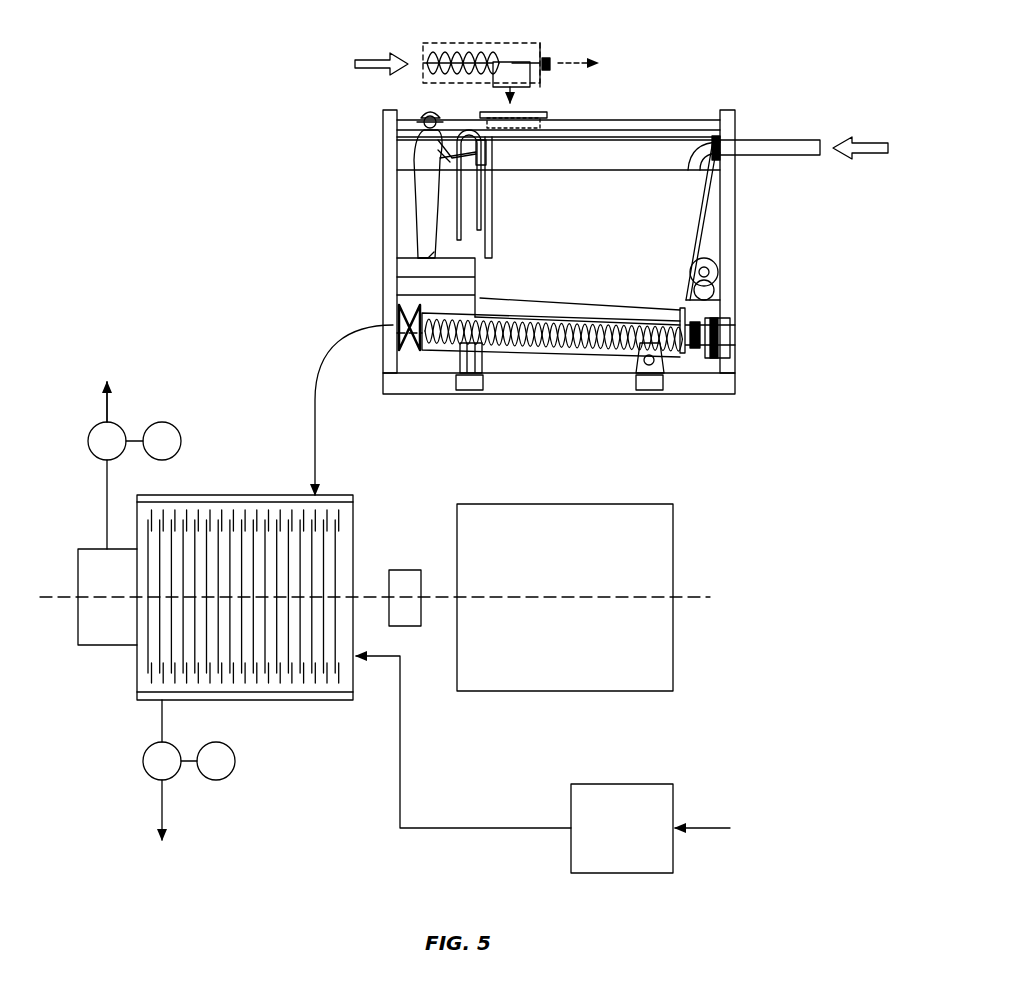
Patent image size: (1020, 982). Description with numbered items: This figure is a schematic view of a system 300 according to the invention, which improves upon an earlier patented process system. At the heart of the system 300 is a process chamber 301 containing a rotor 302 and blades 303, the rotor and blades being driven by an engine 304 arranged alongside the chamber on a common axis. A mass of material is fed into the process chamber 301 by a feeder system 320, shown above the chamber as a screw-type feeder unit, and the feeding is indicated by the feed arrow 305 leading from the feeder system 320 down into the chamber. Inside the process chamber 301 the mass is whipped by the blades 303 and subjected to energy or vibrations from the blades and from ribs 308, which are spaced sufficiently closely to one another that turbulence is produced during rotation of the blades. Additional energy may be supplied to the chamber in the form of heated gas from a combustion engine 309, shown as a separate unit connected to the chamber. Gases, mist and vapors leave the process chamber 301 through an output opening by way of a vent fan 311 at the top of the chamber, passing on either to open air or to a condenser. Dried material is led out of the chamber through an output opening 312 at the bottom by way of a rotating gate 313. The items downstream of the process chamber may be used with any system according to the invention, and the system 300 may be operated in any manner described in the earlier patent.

The system 300 is at (188, 360).
The process chamber 301 is at (210, 494).
The rotor 302 is at (362, 597).
The blades 303 is at (340, 520).
The engine 304 is at (673, 535).
The feed arrow 305 is at (313, 412).
The ribs 308 is at (250, 530).
The combustion engine 309 is at (673, 803).
The vent fan 311 is at (118, 424).
The output opening 312 is at (160, 728).
The rotating gate 313 is at (143, 767).
The feeder system 320 is at (381, 178).